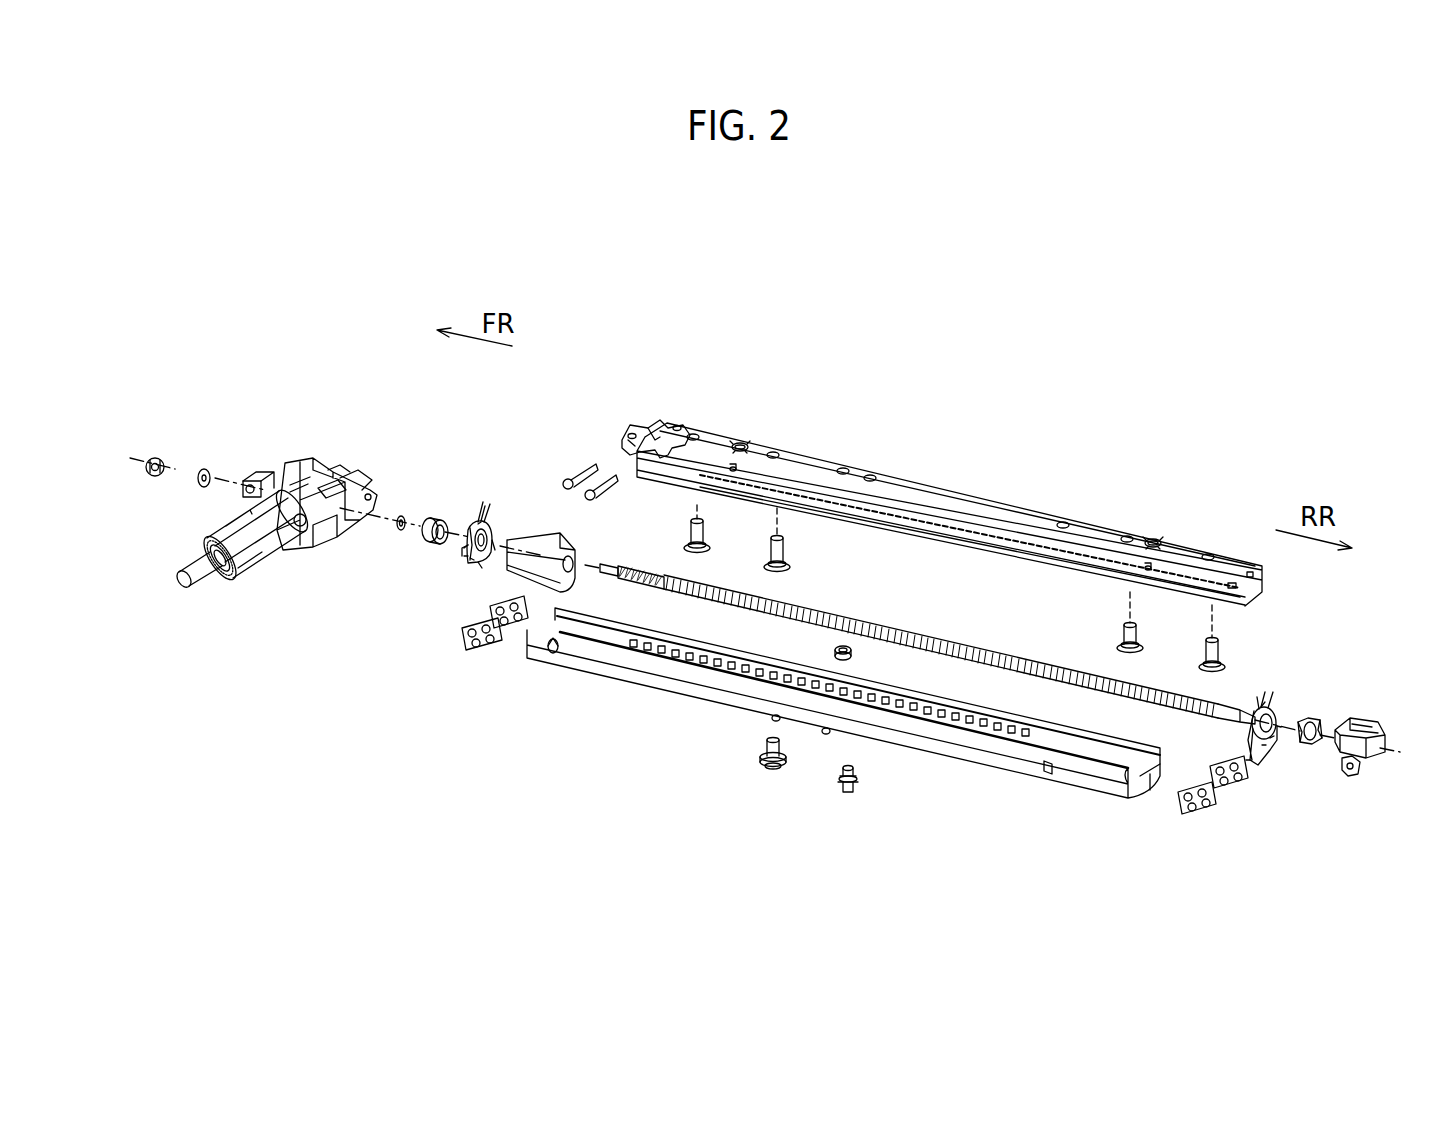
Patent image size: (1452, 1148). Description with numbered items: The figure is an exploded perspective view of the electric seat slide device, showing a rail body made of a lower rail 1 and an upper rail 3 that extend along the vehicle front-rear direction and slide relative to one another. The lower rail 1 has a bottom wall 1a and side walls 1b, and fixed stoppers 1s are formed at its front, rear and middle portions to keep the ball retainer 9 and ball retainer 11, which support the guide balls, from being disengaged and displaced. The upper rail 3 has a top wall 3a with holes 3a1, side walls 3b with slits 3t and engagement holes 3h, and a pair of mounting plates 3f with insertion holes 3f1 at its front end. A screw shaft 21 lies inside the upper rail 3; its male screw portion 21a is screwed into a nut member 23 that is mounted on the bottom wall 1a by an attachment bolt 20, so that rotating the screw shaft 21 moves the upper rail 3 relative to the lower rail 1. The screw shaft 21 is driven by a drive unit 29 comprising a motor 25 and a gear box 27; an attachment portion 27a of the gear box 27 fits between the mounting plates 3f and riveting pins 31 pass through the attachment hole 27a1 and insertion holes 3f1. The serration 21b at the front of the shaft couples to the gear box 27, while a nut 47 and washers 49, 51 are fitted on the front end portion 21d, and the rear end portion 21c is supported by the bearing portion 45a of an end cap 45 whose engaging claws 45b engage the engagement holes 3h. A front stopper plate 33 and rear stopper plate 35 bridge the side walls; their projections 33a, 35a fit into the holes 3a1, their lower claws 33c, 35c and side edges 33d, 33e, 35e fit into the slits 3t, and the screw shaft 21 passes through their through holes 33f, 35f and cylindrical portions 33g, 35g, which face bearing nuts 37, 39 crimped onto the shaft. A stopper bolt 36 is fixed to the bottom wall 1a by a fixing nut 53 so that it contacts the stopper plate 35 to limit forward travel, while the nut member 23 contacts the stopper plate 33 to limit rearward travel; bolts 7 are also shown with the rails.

The lower rail 1 is at (843, 751).
The bottom wall 1a is at (1152, 788).
The side wall 1b is at (634, 690).
The fixed stopper 1s is at (553, 653).
The upper rail 3 is at (924, 495).
The top wall 3a is at (980, 497).
The hole 3a1 is at (742, 444).
The side wall 3b is at (905, 508).
The mounting plate 3f is at (651, 405).
The insertion hole 3f1 is at (673, 437).
The engagement hole 3h is at (1250, 571).
The slit 3t is at (735, 473).
The bolts 7 is at (704, 535).
The retainer 9 is at (468, 648).
The ball retainer 11 is at (508, 628).
The attachment bolt 20 is at (772, 770).
The screw shaft 21 is at (927, 620).
The male screw portion 21a is at (872, 620).
The serration 21b is at (640, 572).
The rear end portion 21c is at (1238, 718).
The front end portion 21d is at (604, 565).
The nut member 23 is at (548, 552).
The motor 25 is at (255, 562).
The gear box 27 is at (341, 510).
The attachment portion 27a is at (358, 480).
The attachment hole 27a1 is at (340, 485).
The drive unit 29 is at (289, 533).
The riveting pin 31 is at (592, 490).
The stopper plate 33 is at (476, 541).
The projection 33a is at (481, 522).
The lower claw 33c is at (480, 566).
The side edge 33d is at (496, 540).
The side edge 33e is at (472, 558).
The through hole 33f is at (468, 558).
The cylindrical portion 33g is at (465, 543).
The stopper plate 35 is at (1297, 743).
The projection 35a is at (1265, 712).
The lower claw 35c is at (1263, 748).
The side edge 35e is at (1252, 762).
The through hole 35f is at (1282, 723).
The cylindrical portion 35g is at (1272, 738).
The stopper bolt 36 is at (846, 795).
The bearing nut 37 is at (432, 520).
The bearing nut 39 is at (1314, 746).
The end cap 45 is at (1388, 759).
The bearing portion 45a is at (1358, 728).
The engaging claw 45b is at (1360, 768).
The nut 47 is at (155, 458).
The washer 49 is at (205, 469).
The washer 51 is at (399, 531).
The fixing nut 53 is at (852, 654).